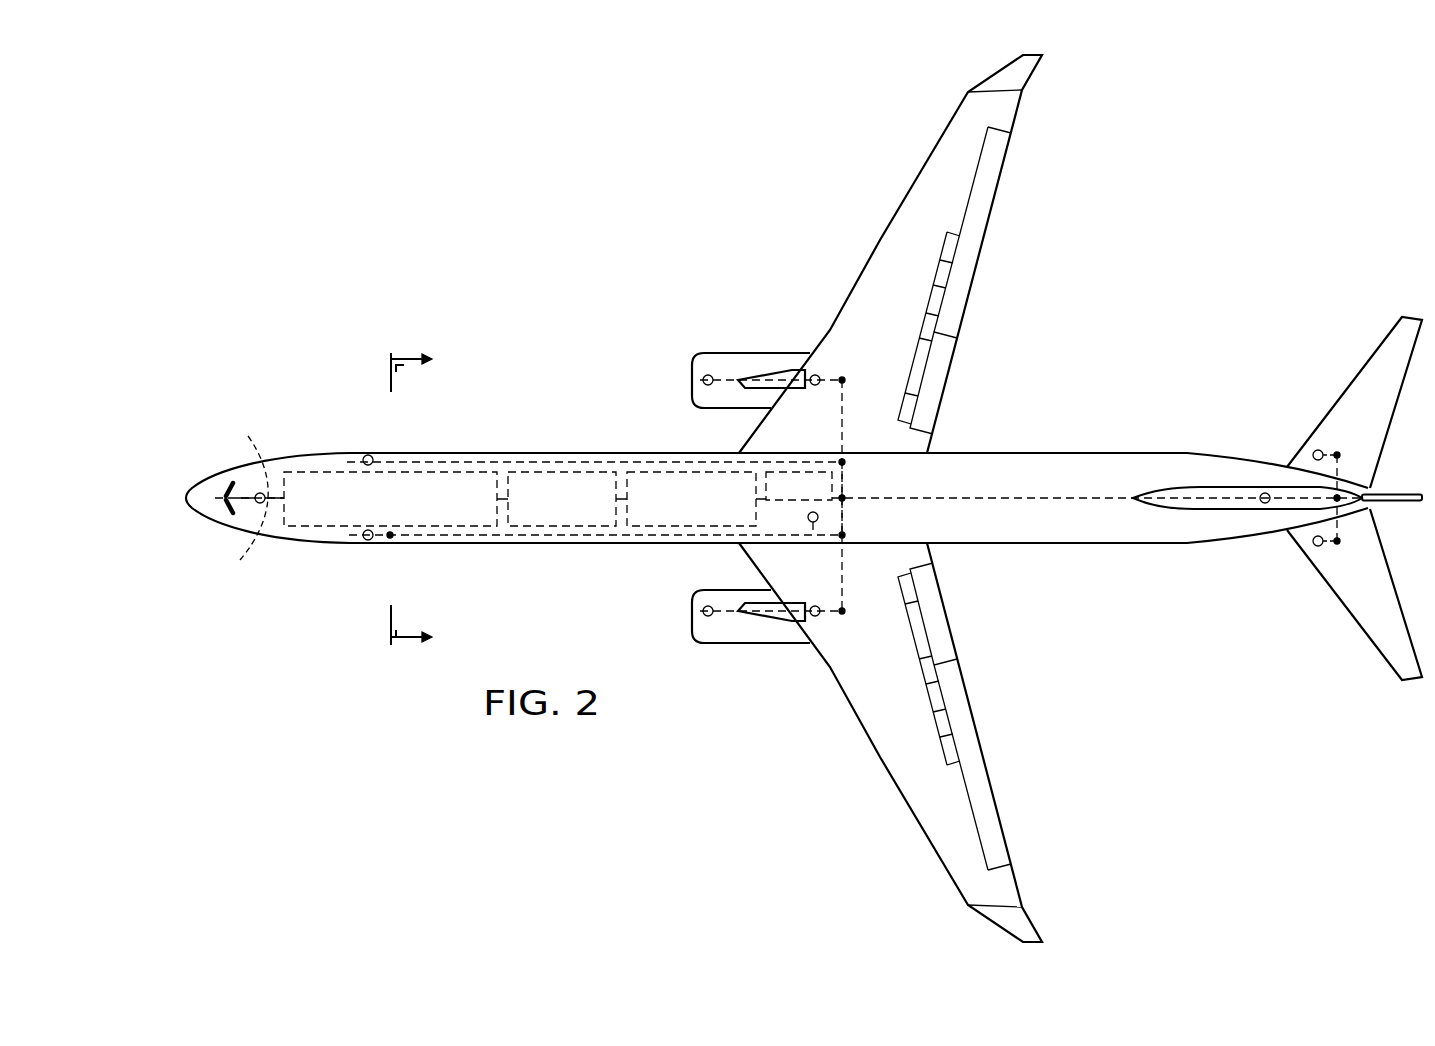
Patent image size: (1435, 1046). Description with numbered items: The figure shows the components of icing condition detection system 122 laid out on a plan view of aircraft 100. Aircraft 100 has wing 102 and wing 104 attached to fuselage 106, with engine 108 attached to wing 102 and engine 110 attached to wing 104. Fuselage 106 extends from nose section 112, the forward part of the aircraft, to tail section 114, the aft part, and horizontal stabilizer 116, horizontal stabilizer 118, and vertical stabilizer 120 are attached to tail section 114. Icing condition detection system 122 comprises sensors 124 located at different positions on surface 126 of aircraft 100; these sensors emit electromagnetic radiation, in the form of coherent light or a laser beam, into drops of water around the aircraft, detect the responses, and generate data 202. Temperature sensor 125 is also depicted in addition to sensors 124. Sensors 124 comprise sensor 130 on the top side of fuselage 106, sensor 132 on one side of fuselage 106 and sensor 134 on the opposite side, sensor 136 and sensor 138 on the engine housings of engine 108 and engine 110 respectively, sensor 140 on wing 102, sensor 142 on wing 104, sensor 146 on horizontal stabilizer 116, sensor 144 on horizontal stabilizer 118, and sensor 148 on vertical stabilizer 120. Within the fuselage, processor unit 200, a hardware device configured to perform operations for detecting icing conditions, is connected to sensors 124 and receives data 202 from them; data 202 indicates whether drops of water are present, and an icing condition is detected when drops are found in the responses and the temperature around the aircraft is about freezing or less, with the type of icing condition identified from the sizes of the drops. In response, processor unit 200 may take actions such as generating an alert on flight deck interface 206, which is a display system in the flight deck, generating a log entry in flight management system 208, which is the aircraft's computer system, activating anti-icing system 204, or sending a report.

The aircraft 100 is at (495, 305).
The wing 102 is at (856, 278).
The wing 104 is at (860, 722).
The fuselage 106 is at (468, 466).
The engine 108 is at (744, 350).
The engine 110 is at (793, 646).
The nose section 112 is at (176, 498).
The tail section 114 is at (1262, 610).
The horizontal stabilizer 116 is at (1363, 375).
The horizontal stabilizer 118 is at (1365, 635).
The vertical stabilizer 120 is at (1400, 494).
The icing condition detection system 122 is at (1015, 335).
The sensors 124 is at (930, 707).
The temperature sensor 125 is at (832, 520).
The surface 126 is at (893, 650).
The sensor 130 is at (258, 492).
The sensor 132 is at (364, 545).
The sensor 134 is at (366, 455).
The sensor 136 is at (690, 375).
The sensor 138 is at (690, 612).
The sensor 140 is at (832, 375).
The sensor 142 is at (806, 602).
The sensor 144 is at (1318, 548).
The sensor 146 is at (1318, 450).
The sensor 148 is at (1265, 492).
The processor unit 200 is at (664, 470).
The data 202 is at (843, 490).
The anti-icing system 204 is at (562, 470).
The flight deck interface 206 is at (250, 540).
The flight management system 208 is at (432, 470).